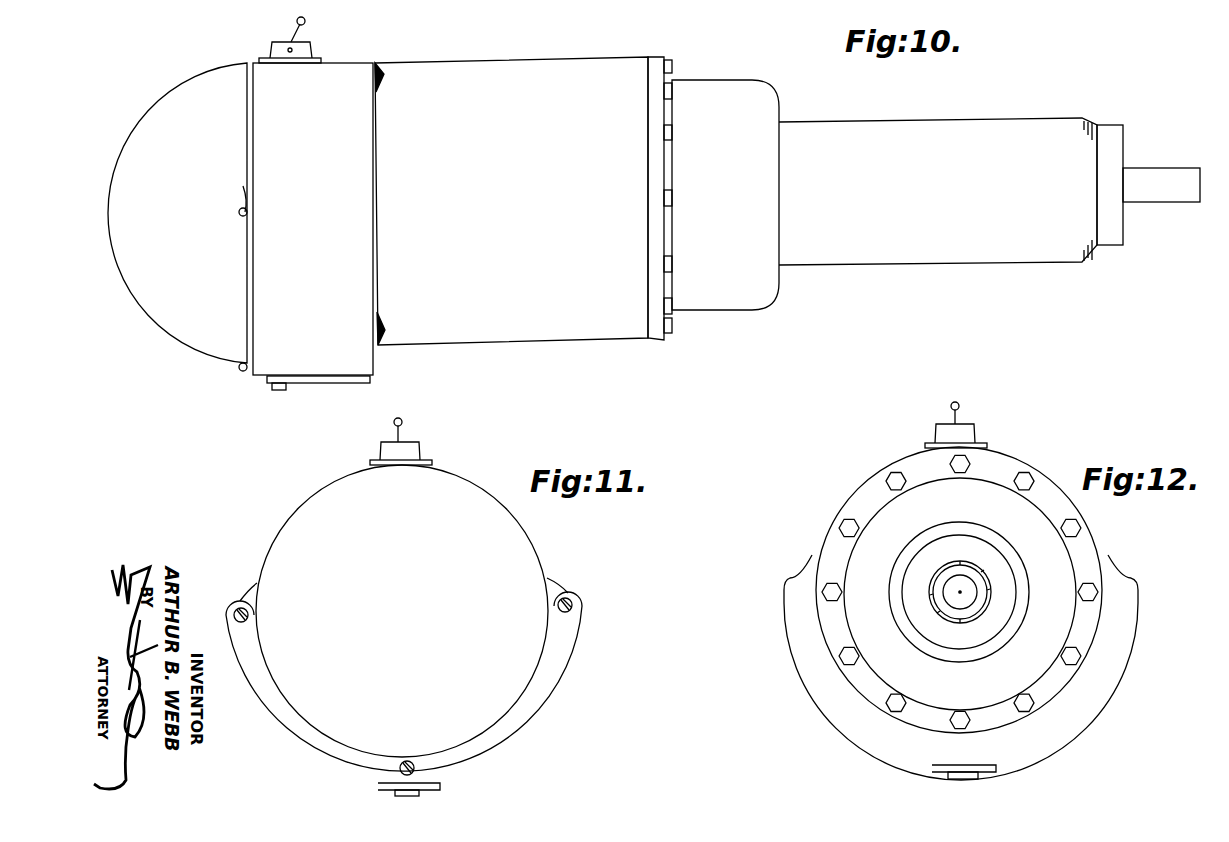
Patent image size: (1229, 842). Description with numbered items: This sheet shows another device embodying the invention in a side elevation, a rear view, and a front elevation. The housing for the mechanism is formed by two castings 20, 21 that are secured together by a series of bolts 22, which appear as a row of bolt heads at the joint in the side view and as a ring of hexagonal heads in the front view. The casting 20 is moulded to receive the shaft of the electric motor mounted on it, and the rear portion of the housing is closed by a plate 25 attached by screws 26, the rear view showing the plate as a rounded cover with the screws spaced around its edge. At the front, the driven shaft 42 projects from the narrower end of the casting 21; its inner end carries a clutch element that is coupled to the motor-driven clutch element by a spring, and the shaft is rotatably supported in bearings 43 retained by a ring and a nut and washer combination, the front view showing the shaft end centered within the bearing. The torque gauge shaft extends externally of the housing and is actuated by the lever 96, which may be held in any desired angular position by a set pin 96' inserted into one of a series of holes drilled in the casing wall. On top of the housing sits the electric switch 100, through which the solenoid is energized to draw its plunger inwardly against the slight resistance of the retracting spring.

In FIG. 10, the casting 20 is at (519, 201).
In FIG. 12, the casting 20 is at (838, 517).
In FIG. 10, the casting 21 is at (760, 118).
In FIG. 12, the casting 21 is at (960, 594).
In FIG. 10, the bolts 22 is at (674, 131).
In FIG. 12, the bolts 22 is at (1022, 478).
In FIG. 10, the plate 25 is at (177, 213).
In FIG. 11, the plate 25 is at (402, 611).
In FIG. 10, the screws 26 is at (241, 216).
In FIG. 11, the screws 26 is at (241, 607).
In FIG. 10, the driven shaft 42 is at (1150, 178).
In FIG. 12, the driven shaft 42 is at (972, 588).
In FIG. 12, the bearings 43 is at (978, 570).
In FIG. 10, the lever 96 is at (318, 396).
In FIG. 11, the lever 96 is at (428, 786).
In FIG. 12, the lever 96 is at (983, 770).
In FIG. 10, the set pin 96' is at (290, 399).
In FIG. 11, the set pin 96' is at (369, 786).
In FIG. 12, the set pin 96' is at (923, 772).
In FIG. 10, the electric switch 100 is at (313, 48).
In FIG. 11, the electric switch 100 is at (418, 452).
In FIG. 12, the electric switch 100 is at (972, 434).